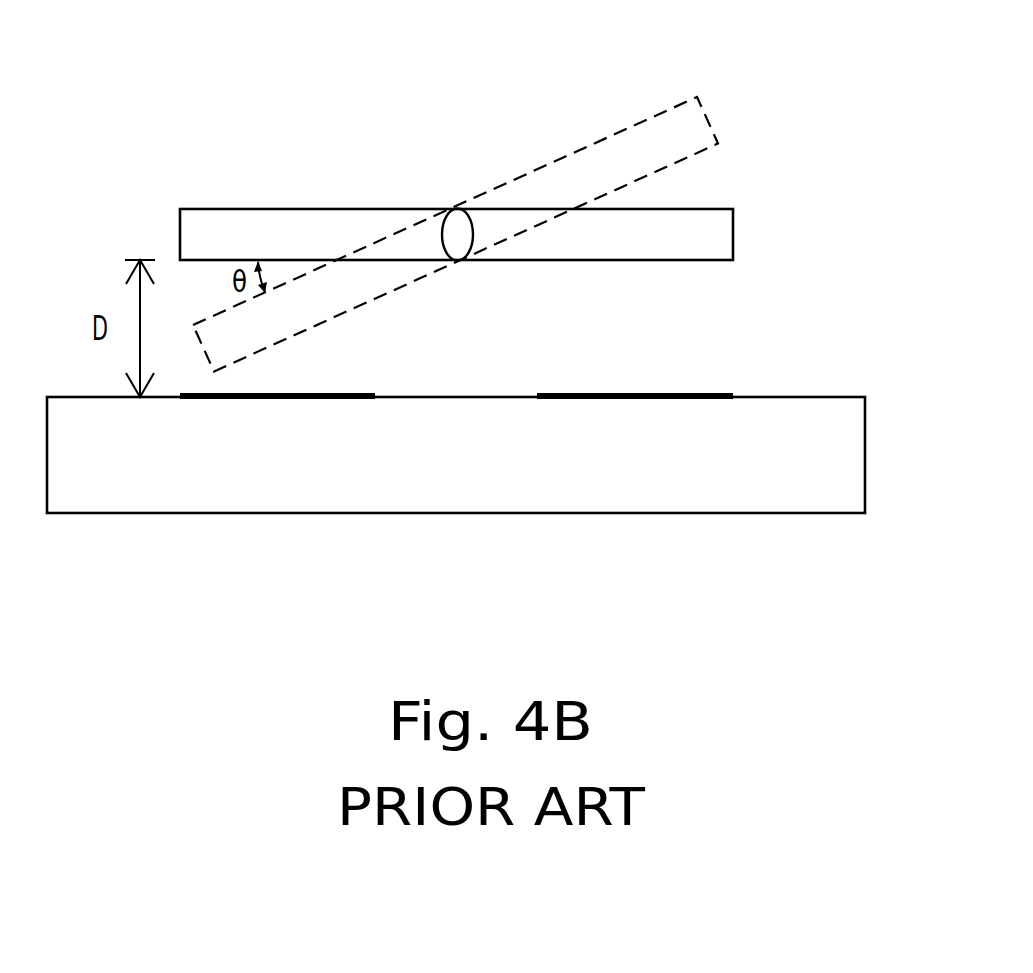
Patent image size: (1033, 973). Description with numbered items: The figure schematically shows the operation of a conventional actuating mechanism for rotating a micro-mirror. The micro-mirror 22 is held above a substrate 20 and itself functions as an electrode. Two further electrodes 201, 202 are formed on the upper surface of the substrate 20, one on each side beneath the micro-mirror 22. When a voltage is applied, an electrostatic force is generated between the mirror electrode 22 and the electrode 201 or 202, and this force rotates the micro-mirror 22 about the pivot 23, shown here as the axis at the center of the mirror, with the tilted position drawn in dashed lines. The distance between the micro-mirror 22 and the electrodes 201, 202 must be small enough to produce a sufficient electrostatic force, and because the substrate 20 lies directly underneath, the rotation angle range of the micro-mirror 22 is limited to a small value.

The substrate 20 is at (808, 453).
The electrode 201 is at (700, 397).
The electrode 202 is at (283, 397).
The micro-mirror 22 is at (693, 238).
The pivot 23 is at (457, 238).